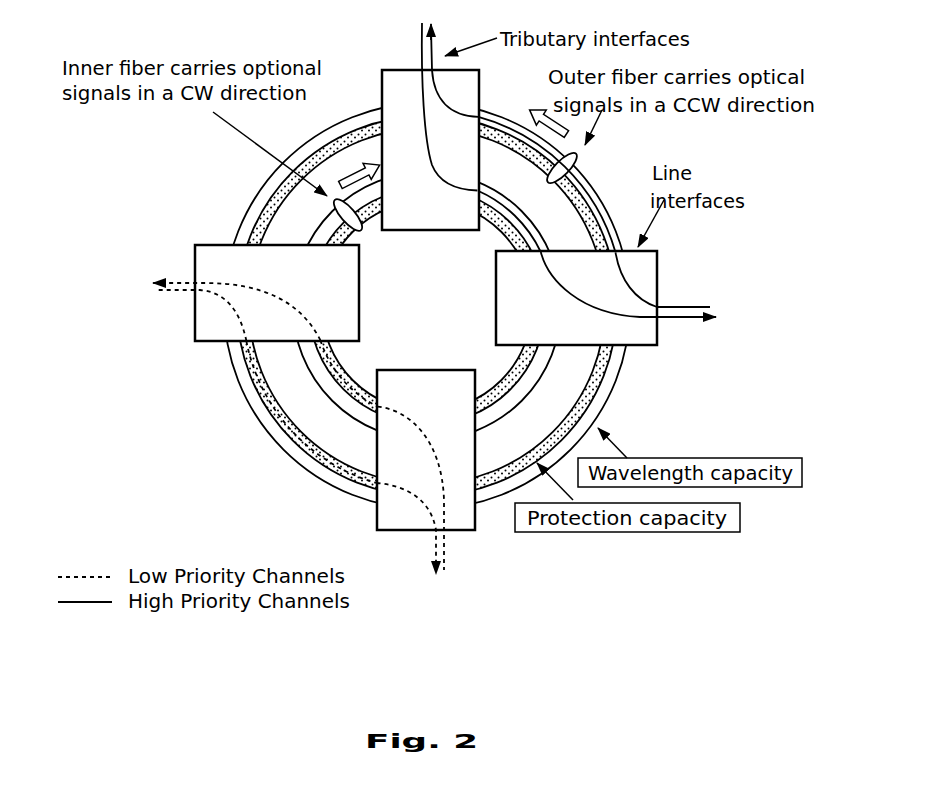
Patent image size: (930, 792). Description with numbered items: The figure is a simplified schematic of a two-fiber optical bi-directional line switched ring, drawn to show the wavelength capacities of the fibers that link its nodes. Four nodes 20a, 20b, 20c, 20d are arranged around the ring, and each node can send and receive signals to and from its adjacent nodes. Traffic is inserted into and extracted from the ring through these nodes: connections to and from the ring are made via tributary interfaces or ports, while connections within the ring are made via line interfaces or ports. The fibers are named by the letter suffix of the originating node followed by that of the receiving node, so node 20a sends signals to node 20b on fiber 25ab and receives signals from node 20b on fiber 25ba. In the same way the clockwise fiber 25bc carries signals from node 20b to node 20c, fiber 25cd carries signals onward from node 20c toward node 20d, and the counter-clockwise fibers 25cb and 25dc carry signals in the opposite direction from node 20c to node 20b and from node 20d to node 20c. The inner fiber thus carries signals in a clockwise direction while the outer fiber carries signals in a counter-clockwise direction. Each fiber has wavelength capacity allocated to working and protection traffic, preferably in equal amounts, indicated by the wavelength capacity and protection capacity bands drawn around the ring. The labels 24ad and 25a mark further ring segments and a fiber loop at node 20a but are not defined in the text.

The node 20a is at (430, 126).
The node 20b is at (606, 298).
The node 20c is at (426, 472).
The node 20d is at (256, 293).
The outer fiber segment between node 1 and node 4 24ad is at (330, 130).
The inner fiber segment at node 1 25a is at (343, 233).
The fiber 25ab is at (545, 237).
The fiber 25ba is at (590, 178).
The fiber 25bc is at (513, 403).
The fiber 25cb is at (613, 407).
The fiber 25cd is at (343, 367).
The fiber 25dc is at (253, 415).